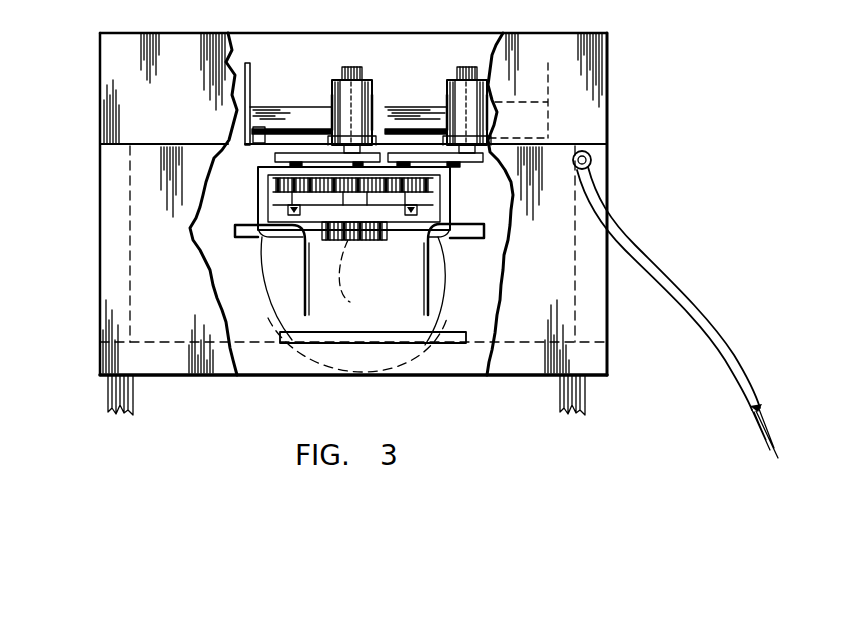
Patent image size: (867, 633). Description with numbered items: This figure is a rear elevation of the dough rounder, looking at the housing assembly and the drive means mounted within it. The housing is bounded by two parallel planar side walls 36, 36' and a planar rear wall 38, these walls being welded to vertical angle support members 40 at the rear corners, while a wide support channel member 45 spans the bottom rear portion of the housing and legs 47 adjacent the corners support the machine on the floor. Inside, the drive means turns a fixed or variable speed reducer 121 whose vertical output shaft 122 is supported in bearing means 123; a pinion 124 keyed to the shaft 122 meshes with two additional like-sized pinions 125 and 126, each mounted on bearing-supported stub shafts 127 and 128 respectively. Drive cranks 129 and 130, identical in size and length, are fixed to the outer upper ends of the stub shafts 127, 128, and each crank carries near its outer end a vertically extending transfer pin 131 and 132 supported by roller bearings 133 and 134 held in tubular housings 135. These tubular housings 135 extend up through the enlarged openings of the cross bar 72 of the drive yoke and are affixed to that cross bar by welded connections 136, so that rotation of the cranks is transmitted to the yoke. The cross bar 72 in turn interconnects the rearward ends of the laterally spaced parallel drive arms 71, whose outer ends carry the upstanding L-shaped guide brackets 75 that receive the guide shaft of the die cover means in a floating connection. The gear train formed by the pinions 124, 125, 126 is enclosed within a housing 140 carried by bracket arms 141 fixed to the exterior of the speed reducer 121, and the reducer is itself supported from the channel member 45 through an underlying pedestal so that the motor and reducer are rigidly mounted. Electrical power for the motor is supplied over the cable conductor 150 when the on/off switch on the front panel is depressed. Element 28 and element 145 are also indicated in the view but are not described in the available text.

The support plate 28 is at (306, 100).
The side wall 36 is at (319, 204).
The side wall 36' is at (639, 204).
The rear wall 38 is at (551, 305).
The vertical angle support member 40 is at (133, 283).
The wide support channel member 45 is at (283, 342).
The legs 47 is at (105, 397).
The drive arm 71 is at (244, 132).
The cross bar 72 is at (280, 130).
The guide bracket 75 is at (251, 63).
The speed reducer 121 is at (396, 322).
The vertical output shaft 122 is at (343, 298).
The bearing means 123 is at (393, 223).
The pinion 124 is at (270, 286).
The pinion 125 is at (273, 185).
The pinion 126 is at (434, 184).
The stub shaft 127 is at (237, 235).
The stub shaft 128 is at (486, 232).
The drive crank 129 is at (280, 153).
The drive crank 130 is at (478, 152).
The transfer pin 131 is at (351, 66).
The transfer pin 132 is at (470, 72).
The roller bearing 133 is at (368, 98).
The roller bearing 134 is at (377, 130).
The tubular housing 135 is at (381, 118).
The welded connection 136 is at (486, 127).
The housing 140 is at (452, 199).
The bracket arm 141 is at (258, 237).
The support 145 is at (437, 350).
The cable conductor 150 is at (684, 286).